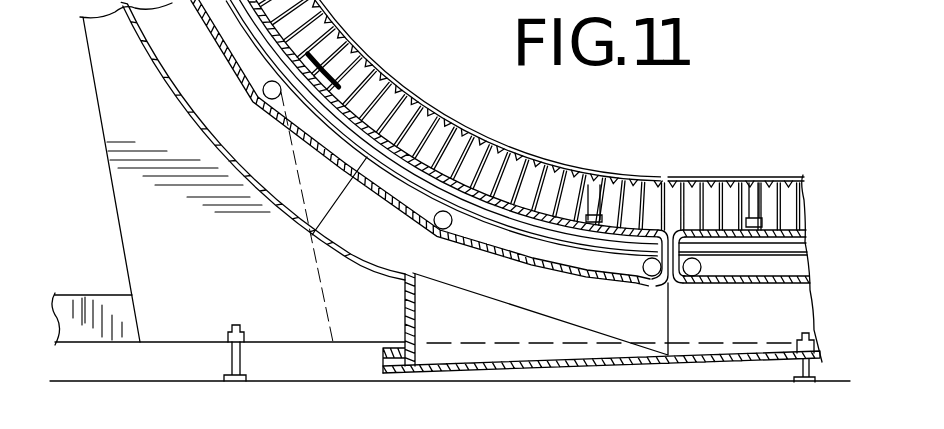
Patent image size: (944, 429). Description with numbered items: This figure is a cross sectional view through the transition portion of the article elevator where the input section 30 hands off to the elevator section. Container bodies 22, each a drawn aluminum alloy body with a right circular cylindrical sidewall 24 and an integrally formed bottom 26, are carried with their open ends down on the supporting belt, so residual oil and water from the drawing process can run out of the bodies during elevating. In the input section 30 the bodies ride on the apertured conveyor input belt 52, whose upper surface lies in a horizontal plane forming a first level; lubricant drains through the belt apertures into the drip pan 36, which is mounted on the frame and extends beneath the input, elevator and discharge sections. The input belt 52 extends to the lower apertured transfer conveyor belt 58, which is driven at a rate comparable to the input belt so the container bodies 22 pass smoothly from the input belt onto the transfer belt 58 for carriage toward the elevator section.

The container body 22 is at (518, 148).
The sidewall 24 is at (513, 180).
The bottom 26 is at (517, 152).
The input section 30 is at (758, 215).
The drip pan 36 is at (272, 218).
The conveyor input belt 52 is at (784, 230).
The transfer conveyor belt 58 is at (584, 270).